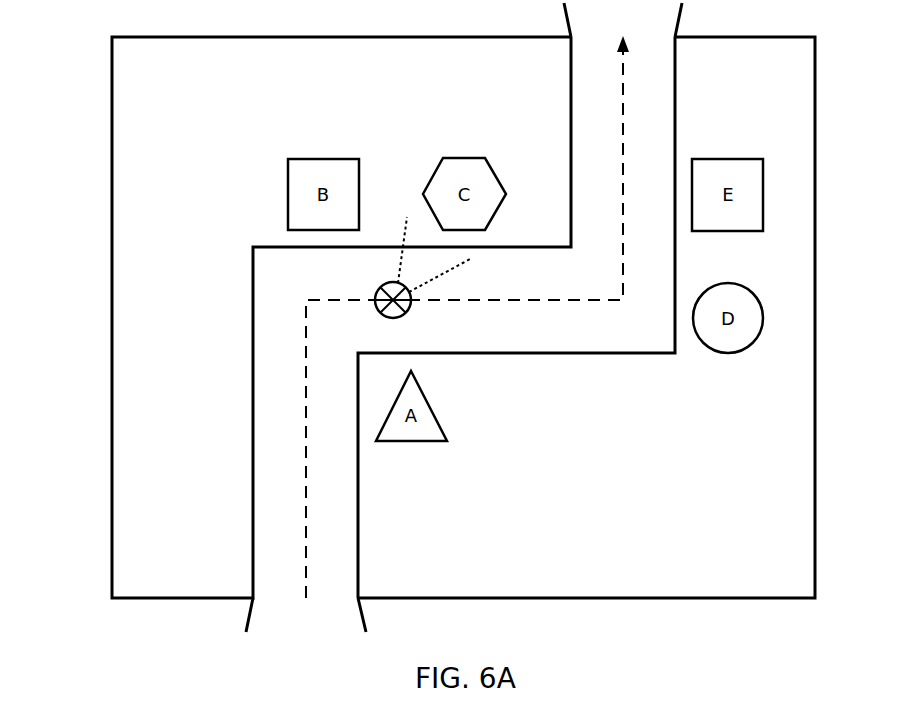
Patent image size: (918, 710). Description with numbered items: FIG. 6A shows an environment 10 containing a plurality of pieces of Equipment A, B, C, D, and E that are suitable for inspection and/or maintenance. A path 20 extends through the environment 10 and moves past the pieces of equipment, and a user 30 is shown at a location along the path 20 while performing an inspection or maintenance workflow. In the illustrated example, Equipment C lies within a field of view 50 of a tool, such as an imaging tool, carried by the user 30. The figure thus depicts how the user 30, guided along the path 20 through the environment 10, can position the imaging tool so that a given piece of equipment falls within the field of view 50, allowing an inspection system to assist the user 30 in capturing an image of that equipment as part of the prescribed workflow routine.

The environment 10 is at (100, 53).
The path 20 is at (306, 405).
The user 30 is at (388, 281).
The field of view 50 is at (451, 272).